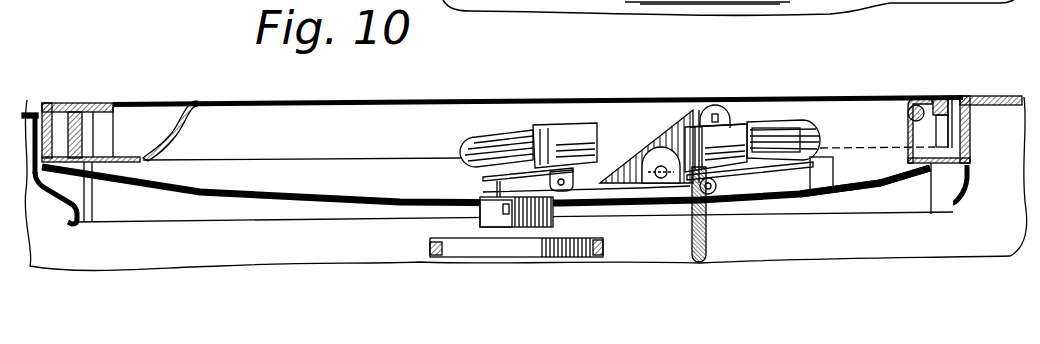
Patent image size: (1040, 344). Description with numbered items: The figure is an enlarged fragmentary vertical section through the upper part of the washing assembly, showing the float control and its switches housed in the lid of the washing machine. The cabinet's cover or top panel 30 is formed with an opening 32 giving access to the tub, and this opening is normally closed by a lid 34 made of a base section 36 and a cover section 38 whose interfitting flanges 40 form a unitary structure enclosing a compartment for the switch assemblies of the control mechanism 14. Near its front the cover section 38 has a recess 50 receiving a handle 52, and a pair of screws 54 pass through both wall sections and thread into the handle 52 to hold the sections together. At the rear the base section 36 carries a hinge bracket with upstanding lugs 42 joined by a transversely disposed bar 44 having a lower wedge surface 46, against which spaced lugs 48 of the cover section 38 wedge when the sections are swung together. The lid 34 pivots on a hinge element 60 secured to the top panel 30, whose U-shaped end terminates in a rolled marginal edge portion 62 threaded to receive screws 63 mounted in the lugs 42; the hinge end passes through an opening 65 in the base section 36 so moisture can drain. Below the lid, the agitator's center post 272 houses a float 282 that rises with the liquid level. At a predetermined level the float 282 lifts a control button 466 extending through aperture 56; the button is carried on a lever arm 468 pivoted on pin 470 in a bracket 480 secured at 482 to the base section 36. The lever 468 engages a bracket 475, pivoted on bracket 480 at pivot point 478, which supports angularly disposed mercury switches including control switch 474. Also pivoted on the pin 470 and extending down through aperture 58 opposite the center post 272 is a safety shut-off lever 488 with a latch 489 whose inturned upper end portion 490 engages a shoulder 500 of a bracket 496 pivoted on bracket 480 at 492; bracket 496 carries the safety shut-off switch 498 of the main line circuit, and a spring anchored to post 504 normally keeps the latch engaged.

The cover or top panel 30 is at (33, 113).
The interfitting flanges 40 is at (45, 190).
The handle 52 is at (82, 104).
The recess 50 is at (150, 112).
The lid 34 is at (538, 86).
The cover section 38 is at (286, 107).
The base section 36 is at (276, 203).
The bracket 496 is at (828, 194).
The opening 32 is at (158, 214).
The screws 54 is at (90, 210).
The control mechanism 14 is at (497, 119).
The control switch 474 is at (462, 150).
The bracket 475 is at (498, 138).
The pivot point 478 is at (573, 115).
The lever arm 468 is at (600, 188).
The latch 489 is at (642, 150).
The securing point 482 is at (661, 166).
The bracket 480 is at (712, 105).
The inturned upper end portion 490 is at (716, 101).
The pivot point 492 is at (750, 99).
The safety shut-off switch 498 is at (807, 126).
The shoulder 500 is at (722, 124).
The pin 470 is at (752, 188).
The post 504 is at (823, 166).
The aperture 58 is at (713, 193).
The safety shut-off lever 488 is at (707, 253).
The aperture 56 is at (477, 202).
The control button 466 is at (477, 224).
The float 282 is at (524, 251).
The center post 272 is at (604, 247).
The screws 63 is at (920, 100).
The rolled marginal edge portion 62 is at (909, 106).
The transversely disposed bar 44 is at (944, 97).
The lugs 42 is at (953, 97).
The wedge surface 46 is at (966, 100).
The hinge element 60 is at (973, 135).
The lugs 48 is at (971, 164).
The opening 65 is at (932, 190).